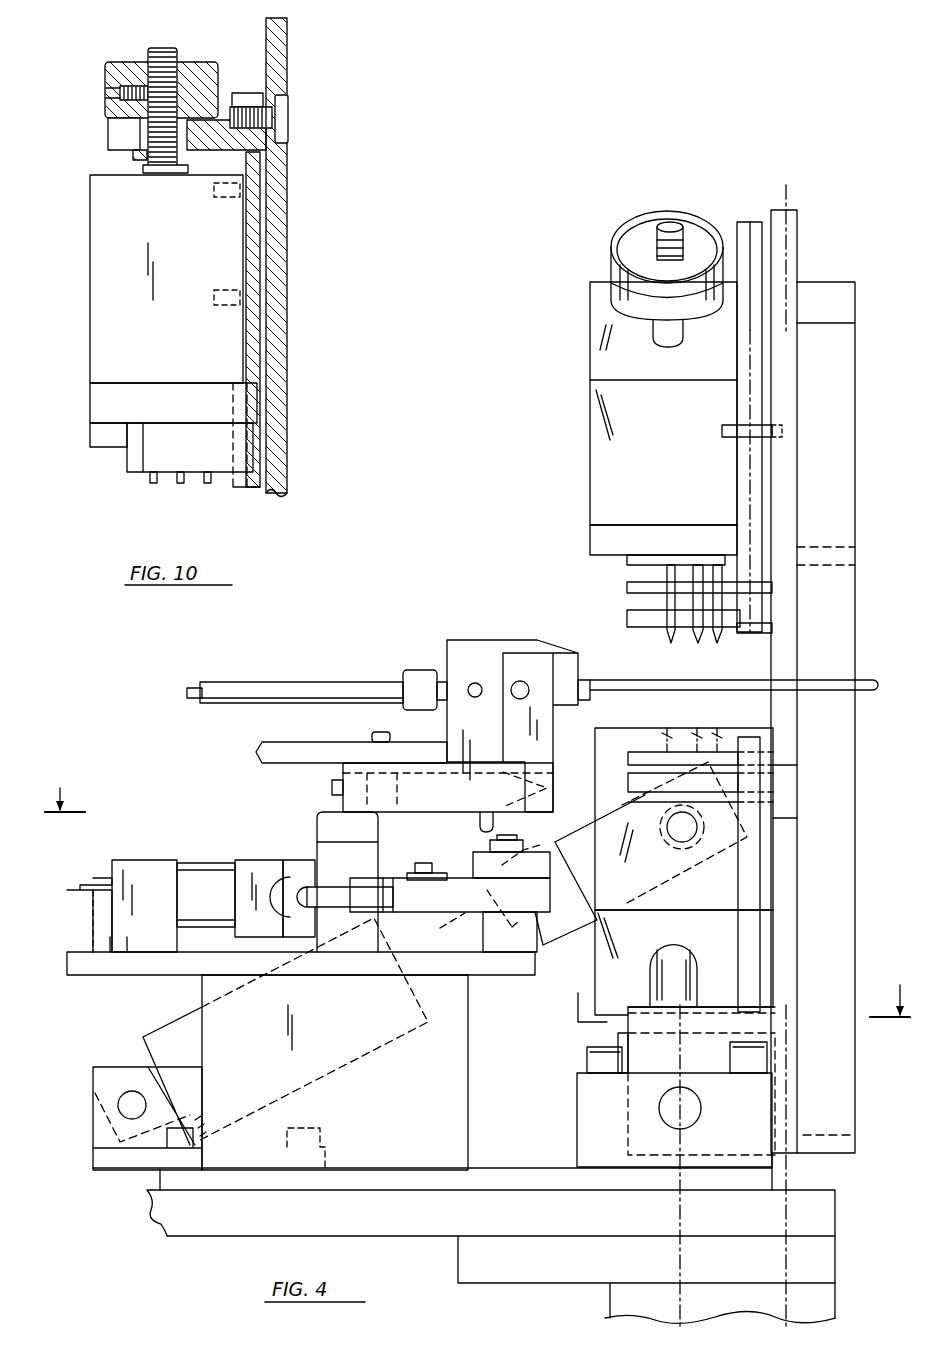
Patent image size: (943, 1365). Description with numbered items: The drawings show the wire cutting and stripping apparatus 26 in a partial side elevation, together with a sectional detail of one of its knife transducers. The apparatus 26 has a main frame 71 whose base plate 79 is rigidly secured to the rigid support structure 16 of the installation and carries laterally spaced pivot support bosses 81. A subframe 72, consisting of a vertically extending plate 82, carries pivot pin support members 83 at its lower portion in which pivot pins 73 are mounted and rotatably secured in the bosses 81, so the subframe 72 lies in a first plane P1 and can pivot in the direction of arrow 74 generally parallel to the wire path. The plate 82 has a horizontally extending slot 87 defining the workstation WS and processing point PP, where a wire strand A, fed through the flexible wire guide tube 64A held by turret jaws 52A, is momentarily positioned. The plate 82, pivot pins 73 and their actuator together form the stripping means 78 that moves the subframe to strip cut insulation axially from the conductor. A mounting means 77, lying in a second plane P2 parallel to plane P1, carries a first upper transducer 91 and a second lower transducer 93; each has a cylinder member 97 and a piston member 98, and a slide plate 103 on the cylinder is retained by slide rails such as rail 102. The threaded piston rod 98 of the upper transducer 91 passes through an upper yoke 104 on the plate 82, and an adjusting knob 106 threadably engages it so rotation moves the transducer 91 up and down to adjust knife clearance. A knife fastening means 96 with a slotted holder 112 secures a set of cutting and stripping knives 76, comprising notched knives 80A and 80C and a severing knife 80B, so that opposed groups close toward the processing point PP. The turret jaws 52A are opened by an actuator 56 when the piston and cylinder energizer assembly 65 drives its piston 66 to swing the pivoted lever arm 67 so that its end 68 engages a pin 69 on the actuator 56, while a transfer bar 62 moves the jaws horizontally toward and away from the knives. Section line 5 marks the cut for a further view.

In FIG. 4, the section line 5- 5 is at (471, 902).
In FIG. 4, the rigid support structure 16 is at (838, 1205).
In FIG. 4, the wire cutting and stripping apparatus 26 is at (596, 276).
In FIG. 4, the turret jaws 52A is at (465, 640).
In FIG. 4, the actuator 56 is at (547, 788).
In FIG. 4, the transfer bar 62 is at (292, 722).
In FIG. 4, the flexible wire guide tube 64A is at (255, 682).
In FIG. 4, the piston and cylinder energizer assembly 65 is at (222, 828).
In FIG. 4, the piston 66 is at (317, 868).
In FIG. 4, the pivoted lever arm 67 is at (473, 860).
In FIG. 4, the end of lever arm 68 is at (572, 815).
In FIG. 4, the pin 69 is at (480, 820).
In FIG. 4, the main frame 71 is at (778, 1176).
In FIG. 4, the subframe 72 is at (798, 203).
In FIG. 4, the pivot pins 73 is at (665, 1105).
In FIG. 4, the arrow 74 is at (645, 697).
In FIG. 4, the set of cutting and stripping knives 76 is at (660, 607).
In FIG. 4, the means for reciprocally mounting knives 77 is at (629, 423).
In FIG. 4, the stripping means 78 is at (173, 1010).
In FIG. 4, the base plate 79 is at (525, 1168).
In FIG. 10, the knife 80A is at (153, 480).
In FIG. 4, the knife 80A is at (640, 588).
In FIG. 10, the severing knife 80B is at (180, 484).
In FIG. 4, the severing knife 80B is at (640, 573).
In FIG. 10, the knife 80C is at (208, 484).
In FIG. 4, the knife 80C is at (720, 572).
In FIG. 4, the pivot support bosses 81 is at (577, 1120).
In FIG. 10, the vertically extending plate 82 is at (287, 30).
In FIG. 4, the vertically extending plate 82 is at (800, 222).
In FIG. 4, the pivot pin support members 83 is at (628, 1027).
In FIG. 4, the horizontally extending slot 87 is at (774, 730).
In FIG. 10, the first upper transducer 91 is at (88, 237).
In FIG. 4, the first upper transducer 91 is at (590, 410).
In FIG. 4, the second lower transducer 93 is at (598, 958).
In FIG. 10, the knife fastening means 96 is at (124, 464).
In FIG. 10, the cylinder member 97 is at (148, 276).
In FIG. 10, the piston member 98 is at (153, 48).
In FIG. 4, the piston member 98 is at (670, 224).
In FIG. 10, the slide rail 102 is at (253, 488).
In FIG. 10, the slide plate 103 is at (253, 233).
In FIG. 10, the upper yoke 104 is at (236, 95).
In FIG. 10, the adjusting knob 106 is at (105, 68).
In FIG. 4, the adjusting knob 106 is at (620, 235).
In FIG. 10, the slotted holder 112 is at (152, 462).
In FIG. 4, the wire strand A is at (196, 688).
In FIG. 4, the first plane P1 is at (784, 196).
In FIG. 4, the second plane P2 is at (680, 1265).
In FIG. 4, the processing point PP is at (690, 666).
In FIG. 4, the workstation WS is at (742, 658).